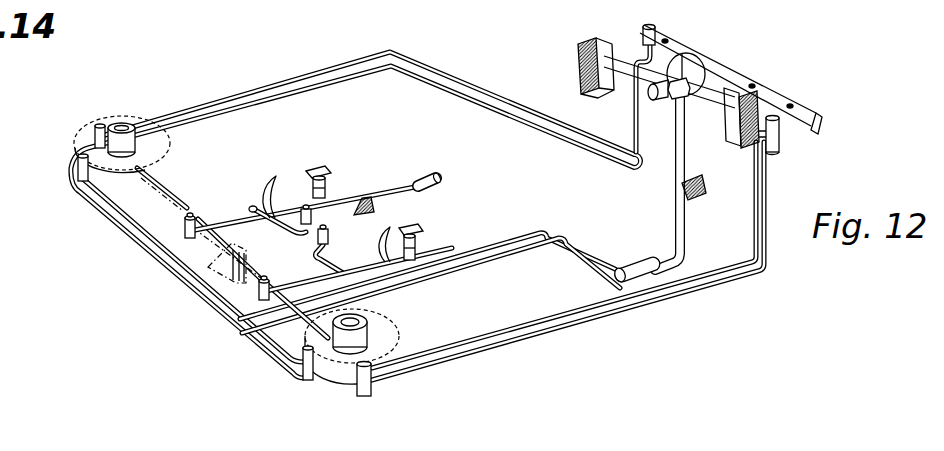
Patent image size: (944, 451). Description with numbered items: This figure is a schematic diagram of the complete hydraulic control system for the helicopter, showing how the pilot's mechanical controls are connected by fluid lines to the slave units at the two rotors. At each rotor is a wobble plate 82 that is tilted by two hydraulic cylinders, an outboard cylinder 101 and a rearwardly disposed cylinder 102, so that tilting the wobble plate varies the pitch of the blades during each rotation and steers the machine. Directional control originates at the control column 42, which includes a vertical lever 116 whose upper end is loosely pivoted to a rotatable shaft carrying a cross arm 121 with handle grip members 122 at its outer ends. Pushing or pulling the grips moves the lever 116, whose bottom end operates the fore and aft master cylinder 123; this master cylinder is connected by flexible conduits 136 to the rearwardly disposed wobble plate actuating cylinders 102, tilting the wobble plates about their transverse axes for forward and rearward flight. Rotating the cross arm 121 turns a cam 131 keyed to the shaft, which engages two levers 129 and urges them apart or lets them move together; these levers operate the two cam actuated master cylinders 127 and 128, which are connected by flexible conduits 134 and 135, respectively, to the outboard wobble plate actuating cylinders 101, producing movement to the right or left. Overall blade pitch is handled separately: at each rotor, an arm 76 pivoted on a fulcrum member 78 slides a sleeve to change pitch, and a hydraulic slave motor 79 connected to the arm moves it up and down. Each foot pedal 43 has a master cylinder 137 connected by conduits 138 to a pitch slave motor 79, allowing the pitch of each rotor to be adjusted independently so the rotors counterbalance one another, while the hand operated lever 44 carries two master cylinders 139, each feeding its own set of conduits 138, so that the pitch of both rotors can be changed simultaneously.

The flexible conduit 134 is at (397, 58).
The flexible conduit 135 is at (607, 306).
The flexible conduits 136 is at (483, 250).
The arm 76 is at (133, 214).
The fulcrum member 78 is at (208, 268).
The hydraulic slave motor 79 is at (183, 233).
The hand operated lever 44 is at (411, 189).
The conduits 138 is at (349, 206).
The foot pedal 43 is at (326, 170).
The master cylinder 137 is at (327, 190).
The master cylinders 139 is at (332, 237).
The wobble plate structure 82 is at (176, 152).
The hydraulic cylinder 101 is at (103, 123).
The hydraulic cylinder 102 is at (76, 156).
The control column 42 is at (668, 181).
The master cylinder 123 is at (655, 258).
The vertical lever 116 is at (687, 226).
The master cylinder 127 is at (652, 30).
The lever 129 is at (742, 82).
The cam 131 is at (704, 66).
The cross arm 121 is at (632, 85).
The handle grip member 122 is at (740, 150).
The master cylinder 128 is at (780, 142).